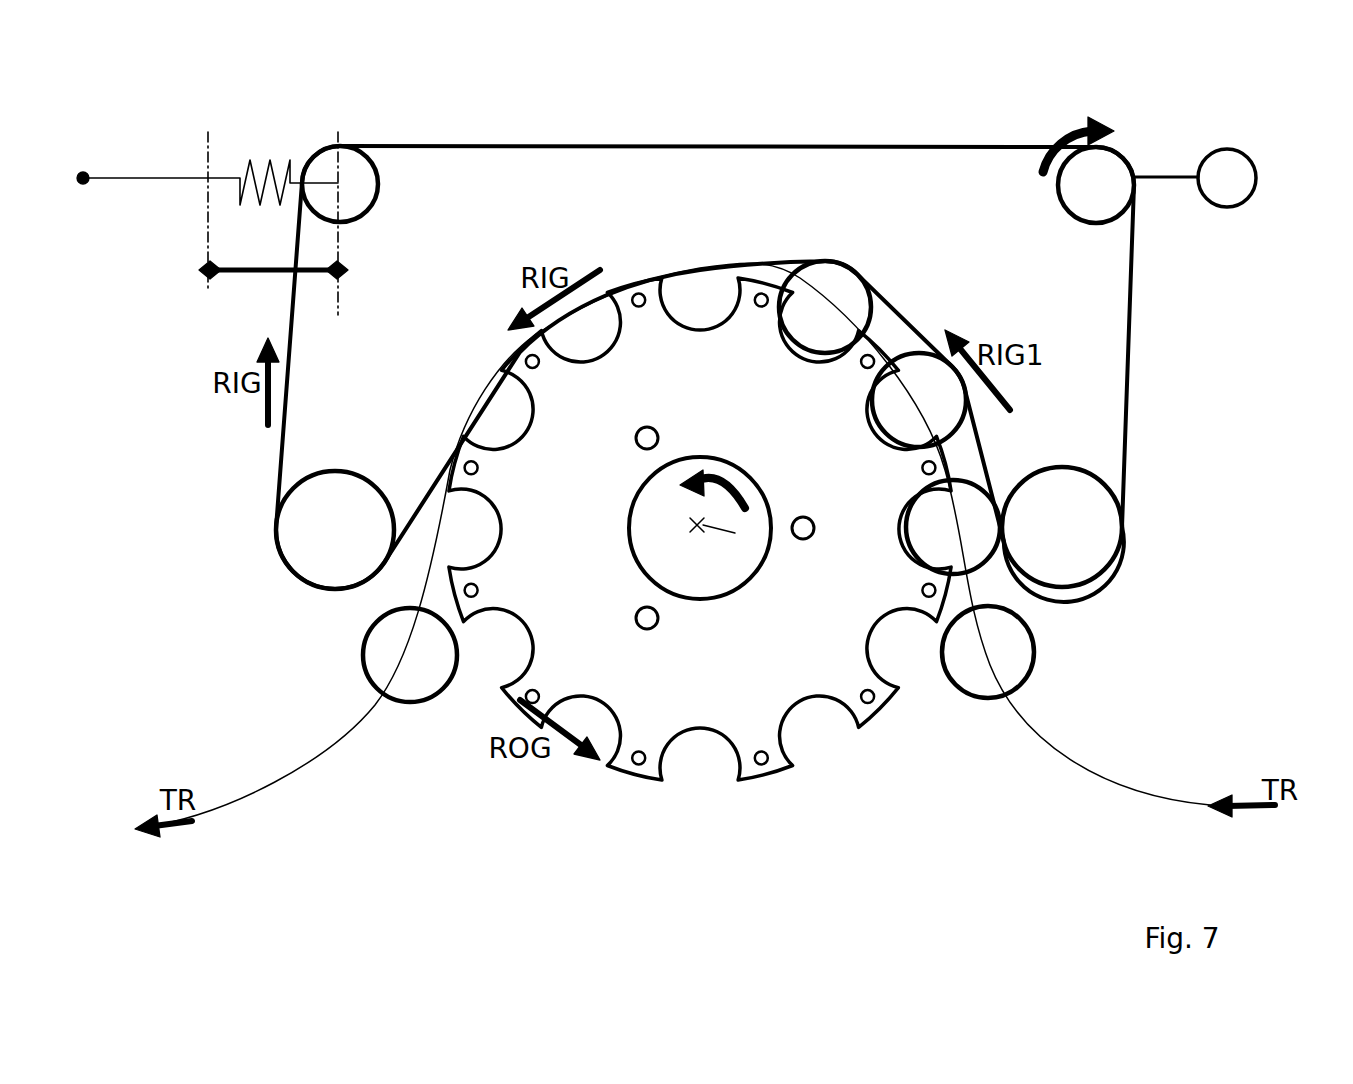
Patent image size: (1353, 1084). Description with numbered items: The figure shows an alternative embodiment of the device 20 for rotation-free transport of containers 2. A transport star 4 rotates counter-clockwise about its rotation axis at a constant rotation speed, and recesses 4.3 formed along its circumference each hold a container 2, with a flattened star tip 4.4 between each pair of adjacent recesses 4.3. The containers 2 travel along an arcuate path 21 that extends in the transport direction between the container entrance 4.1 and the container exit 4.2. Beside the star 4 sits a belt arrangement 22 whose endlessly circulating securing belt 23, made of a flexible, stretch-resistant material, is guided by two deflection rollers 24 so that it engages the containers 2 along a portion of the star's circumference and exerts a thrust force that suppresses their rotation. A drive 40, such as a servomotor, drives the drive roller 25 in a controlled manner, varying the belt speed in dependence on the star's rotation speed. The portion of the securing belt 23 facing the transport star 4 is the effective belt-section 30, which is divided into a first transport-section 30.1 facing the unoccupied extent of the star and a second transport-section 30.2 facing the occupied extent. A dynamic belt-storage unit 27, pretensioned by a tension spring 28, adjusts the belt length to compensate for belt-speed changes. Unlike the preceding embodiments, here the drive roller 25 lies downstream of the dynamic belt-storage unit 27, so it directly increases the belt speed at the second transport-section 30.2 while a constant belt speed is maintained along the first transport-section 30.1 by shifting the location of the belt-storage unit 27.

The container 2 is at (1015, 658).
The transport star 4 is at (663, 803).
The container entrance 4.1 is at (1036, 599).
The container exit 4.2 is at (399, 585).
The recess 4.3 is at (908, 653).
The flattened star tip 4.4 is at (890, 718).
The device 20 is at (1229, 117).
The arcuate path 21 is at (563, 231).
The belt arrangement 22 is at (745, 107).
The securing belt 23 is at (495, 148).
The deflection roller 24 is at (325, 165).
The drive roller 25 is at (1120, 195).
The dynamic belt-storage unit 27 is at (348, 108).
The tension spring 28 is at (230, 212).
The effective belt-section 30 is at (730, 212).
The first transport-section 30.1 is at (468, 344).
The second transport-section 30.2 is at (920, 294).
The drive 40 is at (1240, 197).